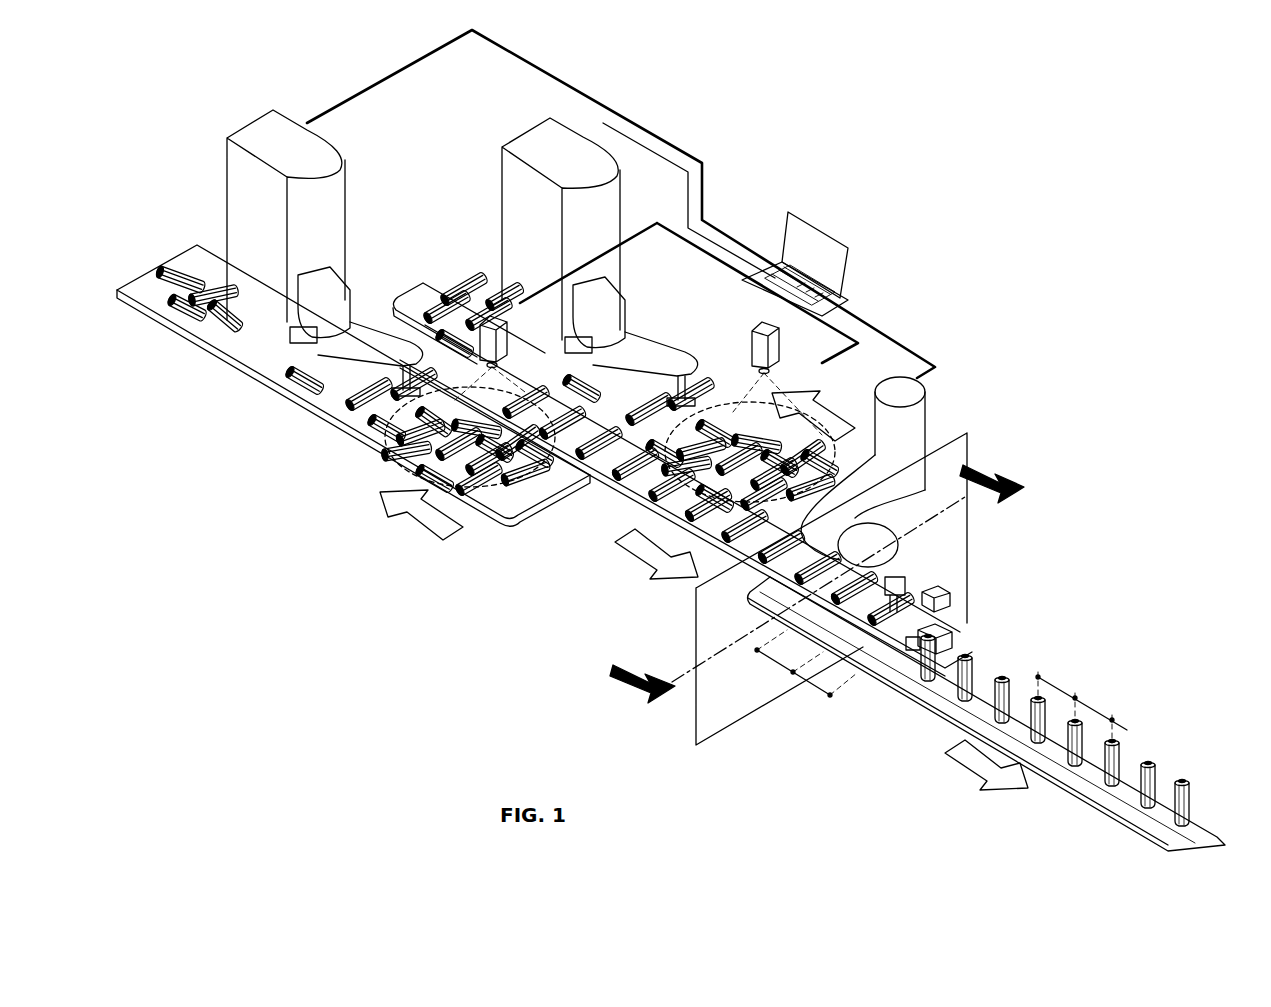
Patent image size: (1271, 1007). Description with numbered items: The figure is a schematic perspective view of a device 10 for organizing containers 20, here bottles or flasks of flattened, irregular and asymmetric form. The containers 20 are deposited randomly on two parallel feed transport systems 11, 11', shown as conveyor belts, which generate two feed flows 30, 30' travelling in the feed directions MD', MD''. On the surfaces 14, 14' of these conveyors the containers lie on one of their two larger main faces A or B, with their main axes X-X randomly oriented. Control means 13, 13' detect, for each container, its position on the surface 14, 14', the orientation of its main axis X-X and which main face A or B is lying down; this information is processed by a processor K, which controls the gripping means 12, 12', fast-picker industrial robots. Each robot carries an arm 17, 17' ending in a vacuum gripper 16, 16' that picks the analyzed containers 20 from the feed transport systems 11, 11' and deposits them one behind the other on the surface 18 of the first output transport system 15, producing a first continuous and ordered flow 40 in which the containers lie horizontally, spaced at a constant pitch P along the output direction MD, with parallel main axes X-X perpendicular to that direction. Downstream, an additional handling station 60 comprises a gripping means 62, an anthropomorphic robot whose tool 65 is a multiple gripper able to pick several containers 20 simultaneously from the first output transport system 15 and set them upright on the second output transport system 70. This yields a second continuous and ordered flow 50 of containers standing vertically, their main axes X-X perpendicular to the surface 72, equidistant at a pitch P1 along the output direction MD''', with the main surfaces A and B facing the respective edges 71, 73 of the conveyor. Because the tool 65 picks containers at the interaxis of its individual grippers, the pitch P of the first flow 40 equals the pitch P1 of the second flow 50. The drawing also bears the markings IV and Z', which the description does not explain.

The device 10 is at (712, 133).
The feed transport system 11 is at (353, 416).
The feed transport system 11' is at (457, 303).
The gripping means 12 is at (264, 198).
The gripping means 12' is at (536, 214).
The control means 13 is at (471, 286).
The control means 13' is at (759, 363).
The surface 14 is at (214, 329).
The surface 14' is at (473, 290).
The first output transport system 15 is at (630, 512).
The gripper 16 is at (433, 431).
The gripper 16' is at (732, 434).
The arm 17 is at (356, 310).
The arm 17' is at (636, 333).
The surface 18 is at (952, 647).
The containers 20 is at (383, 407).
The feed flow 30 is at (353, 380).
The feed flow 30' is at (597, 342).
The first continuous and ordered output flow 40 is at (686, 500).
The second continuous and ordered output flow 50 is at (1008, 714).
The additional handling station 60 is at (964, 509).
The gripping means 62 is at (913, 445).
The tool 65 is at (937, 597).
The second output transport system 70 is at (1008, 714).
The edge 71 is at (1140, 808).
The surface 72 is at (1127, 790).
The edge 73 is at (1197, 823).
The main face A is at (182, 323).
The main face B is at (180, 277).
The processor K is at (820, 240).
The output direction MD is at (631, 568).
The feed direction MD' is at (391, 528).
The feed direction MD'' is at (834, 400).
The output direction MD''' is at (953, 781).
The viewing direction of FIG. 4 IV is at (817, 575).
The main axis X-X is at (863, 673).
The vertical reference plane Z' is at (786, 606).
The pitch P is at (806, 663).
The pitch P1 is at (1081, 706).